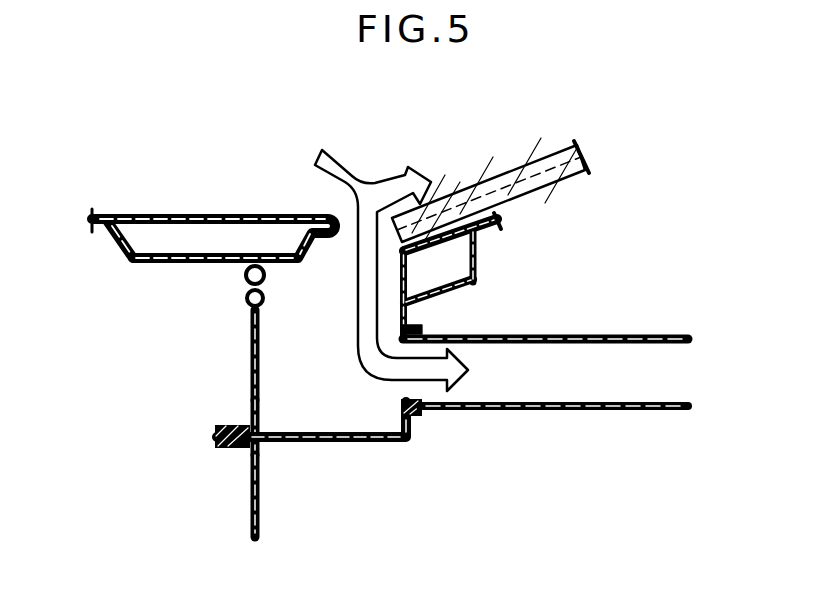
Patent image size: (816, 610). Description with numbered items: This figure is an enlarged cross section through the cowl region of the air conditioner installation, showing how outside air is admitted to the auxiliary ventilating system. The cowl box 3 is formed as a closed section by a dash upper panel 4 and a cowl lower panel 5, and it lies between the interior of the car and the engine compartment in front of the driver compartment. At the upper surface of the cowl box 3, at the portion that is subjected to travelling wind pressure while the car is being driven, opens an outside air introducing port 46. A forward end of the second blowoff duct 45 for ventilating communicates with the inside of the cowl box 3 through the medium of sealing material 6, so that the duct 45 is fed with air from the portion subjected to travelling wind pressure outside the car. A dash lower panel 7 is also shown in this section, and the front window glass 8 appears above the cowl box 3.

The cowl box 3 is at (267, 362).
The dash upper panel 4 is at (337, 442).
The cowl lower panel 5 is at (250, 387).
The sealing material 6 is at (412, 417).
The dash lower panel 7 is at (250, 492).
The front window glass 8 is at (543, 155).
The second blowoff duct for ventilating 45 is at (648, 336).
The outside air introducing port 46 is at (343, 220).